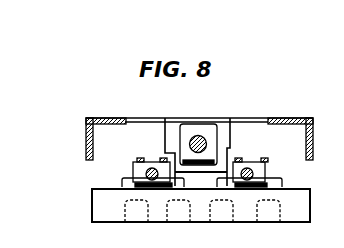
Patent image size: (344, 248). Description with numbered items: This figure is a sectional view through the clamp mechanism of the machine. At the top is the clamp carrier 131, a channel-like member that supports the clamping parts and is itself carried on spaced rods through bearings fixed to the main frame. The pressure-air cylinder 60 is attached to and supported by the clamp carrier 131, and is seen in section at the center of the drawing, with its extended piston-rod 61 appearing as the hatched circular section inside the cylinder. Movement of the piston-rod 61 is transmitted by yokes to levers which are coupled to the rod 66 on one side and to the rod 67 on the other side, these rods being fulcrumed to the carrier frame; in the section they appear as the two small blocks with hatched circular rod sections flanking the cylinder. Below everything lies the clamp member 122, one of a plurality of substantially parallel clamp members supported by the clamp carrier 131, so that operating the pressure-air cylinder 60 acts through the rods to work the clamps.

The pressure-air cylinder 60 is at (172, 128).
The piston-rod 61 is at (203, 136).
The rod 66 is at (150, 164).
The rod 67 is at (248, 165).
The clamp member 122 is at (97, 205).
The clamp carrier 131 is at (68, 107).